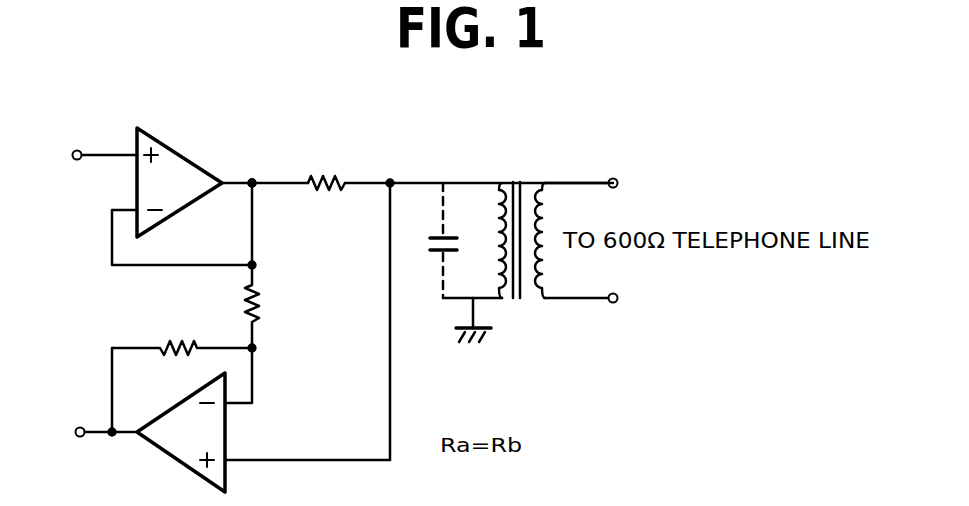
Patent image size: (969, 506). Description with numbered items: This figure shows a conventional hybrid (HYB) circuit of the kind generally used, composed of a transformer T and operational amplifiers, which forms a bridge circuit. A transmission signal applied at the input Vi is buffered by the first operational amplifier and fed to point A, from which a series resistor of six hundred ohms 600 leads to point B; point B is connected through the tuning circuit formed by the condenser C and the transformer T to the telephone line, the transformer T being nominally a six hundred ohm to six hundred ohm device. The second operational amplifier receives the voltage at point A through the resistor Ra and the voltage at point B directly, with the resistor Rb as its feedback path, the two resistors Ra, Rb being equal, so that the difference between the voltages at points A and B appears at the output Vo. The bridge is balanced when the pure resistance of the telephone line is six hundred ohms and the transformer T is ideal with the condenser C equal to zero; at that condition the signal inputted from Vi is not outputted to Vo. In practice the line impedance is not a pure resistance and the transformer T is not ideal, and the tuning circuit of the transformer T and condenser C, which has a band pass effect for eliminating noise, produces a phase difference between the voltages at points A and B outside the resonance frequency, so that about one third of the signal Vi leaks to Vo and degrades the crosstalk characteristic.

The input signal Vi is at (86, 156).
The output signal Vo is at (90, 434).
The point A is at (255, 172).
The point B is at (392, 172).
The 600 ohm resistance 600 is at (326, 170).
The condenser C is at (434, 240).
The transformer T is at (580, 202).
The resistor Ra is at (269, 306).
The resistor Rb is at (182, 337).